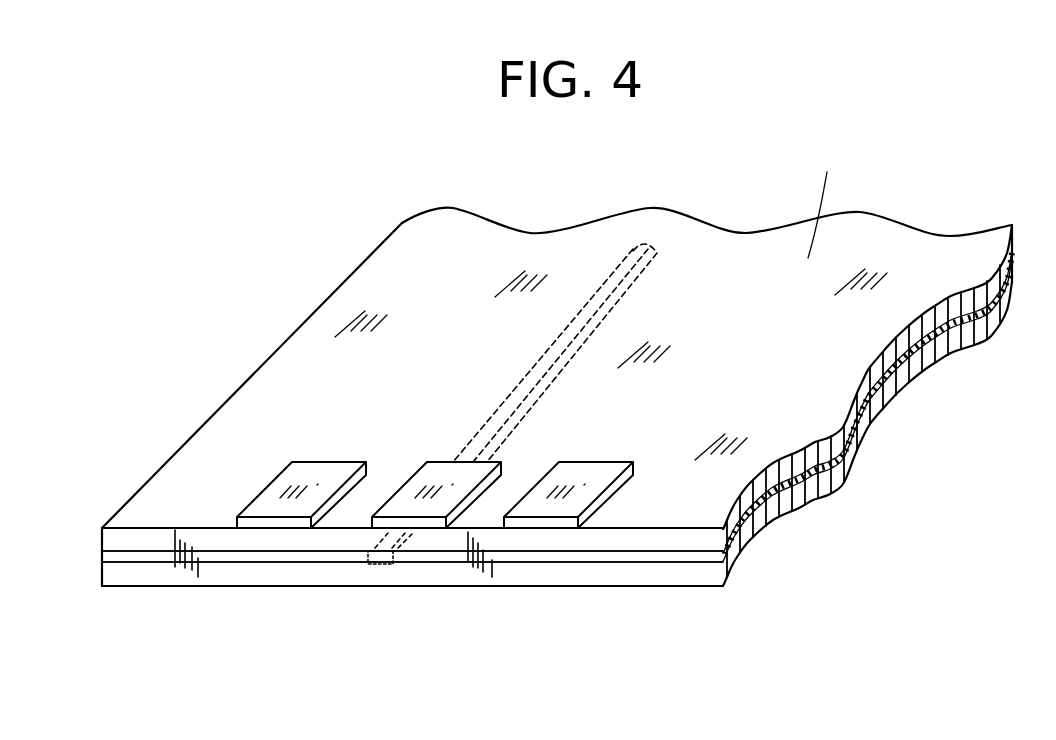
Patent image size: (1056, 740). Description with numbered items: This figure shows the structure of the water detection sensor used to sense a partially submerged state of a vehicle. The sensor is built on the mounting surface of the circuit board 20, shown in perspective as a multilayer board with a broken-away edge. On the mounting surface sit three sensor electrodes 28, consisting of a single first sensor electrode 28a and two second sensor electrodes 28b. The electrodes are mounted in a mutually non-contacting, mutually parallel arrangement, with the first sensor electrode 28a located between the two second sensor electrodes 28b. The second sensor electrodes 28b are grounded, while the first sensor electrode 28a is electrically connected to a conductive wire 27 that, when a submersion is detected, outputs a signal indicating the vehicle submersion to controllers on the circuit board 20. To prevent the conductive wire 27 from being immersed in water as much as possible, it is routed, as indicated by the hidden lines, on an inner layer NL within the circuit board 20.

The circuit board 20 is at (952, 232).
The conductive wire 27 is at (618, 284).
The sensor electrodes 28 is at (643, 413).
The first sensor electrode 28a is at (437, 460).
The second sensor electrodes 28b is at (304, 460).
The inner layer NL is at (677, 557).